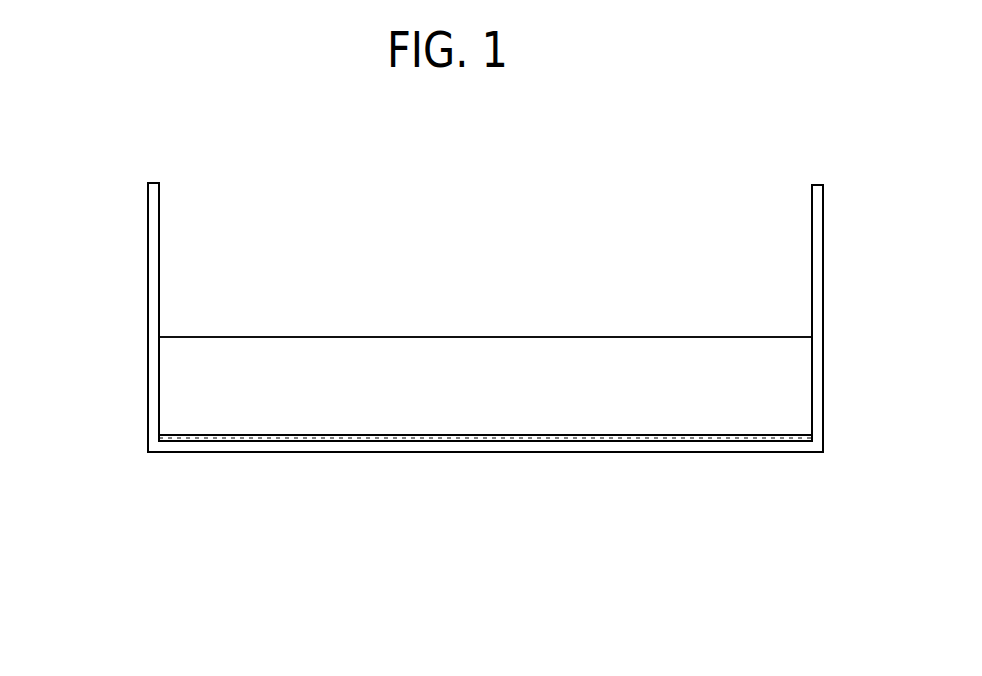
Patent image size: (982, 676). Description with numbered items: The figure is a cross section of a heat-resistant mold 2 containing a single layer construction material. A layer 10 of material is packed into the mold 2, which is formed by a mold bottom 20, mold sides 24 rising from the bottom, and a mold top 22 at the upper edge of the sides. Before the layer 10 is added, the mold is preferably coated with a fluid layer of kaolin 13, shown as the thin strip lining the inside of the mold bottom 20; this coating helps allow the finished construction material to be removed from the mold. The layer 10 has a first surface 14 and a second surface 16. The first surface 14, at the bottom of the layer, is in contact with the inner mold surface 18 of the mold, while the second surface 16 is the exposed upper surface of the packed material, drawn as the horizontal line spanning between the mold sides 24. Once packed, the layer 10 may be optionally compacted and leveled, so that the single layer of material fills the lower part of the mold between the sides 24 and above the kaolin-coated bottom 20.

The container 2 is at (146, 228).
The layer 10 is at (306, 336).
The fluid layer of kaolin 13 is at (344, 438).
The first surface 14 is at (267, 441).
The second surface 16 is at (541, 335).
The inner mold surface 18 is at (475, 438).
The mold bottom 20 is at (622, 453).
The mold top 22 is at (166, 201).
The mold sides 24 is at (146, 366).